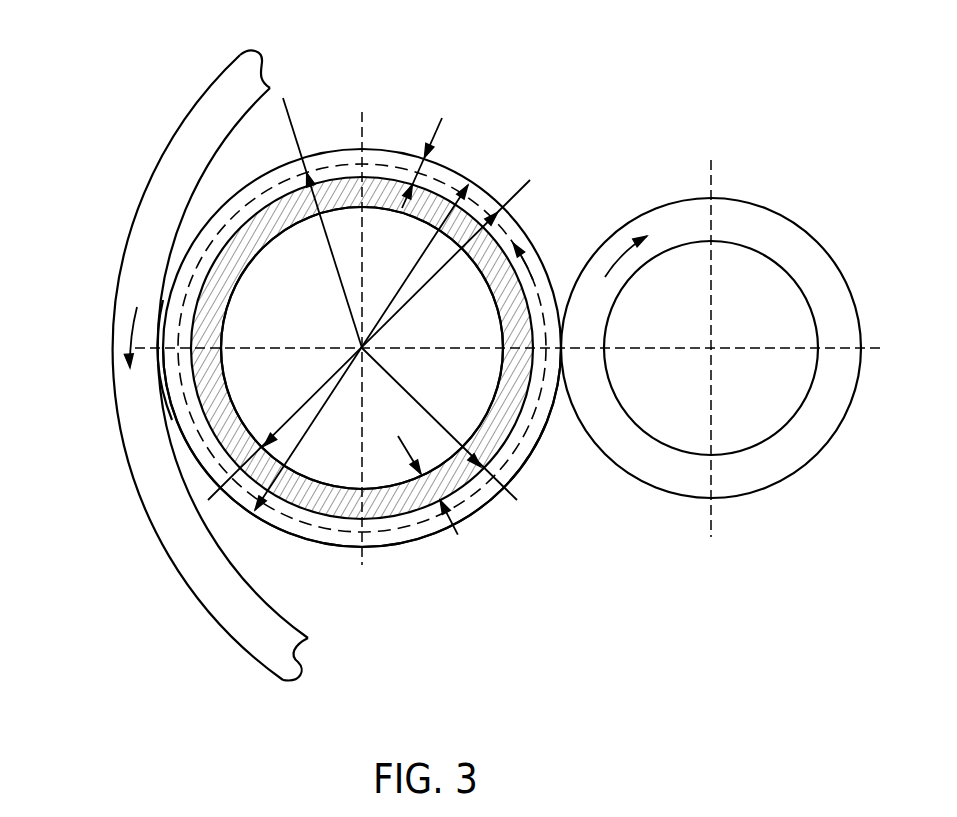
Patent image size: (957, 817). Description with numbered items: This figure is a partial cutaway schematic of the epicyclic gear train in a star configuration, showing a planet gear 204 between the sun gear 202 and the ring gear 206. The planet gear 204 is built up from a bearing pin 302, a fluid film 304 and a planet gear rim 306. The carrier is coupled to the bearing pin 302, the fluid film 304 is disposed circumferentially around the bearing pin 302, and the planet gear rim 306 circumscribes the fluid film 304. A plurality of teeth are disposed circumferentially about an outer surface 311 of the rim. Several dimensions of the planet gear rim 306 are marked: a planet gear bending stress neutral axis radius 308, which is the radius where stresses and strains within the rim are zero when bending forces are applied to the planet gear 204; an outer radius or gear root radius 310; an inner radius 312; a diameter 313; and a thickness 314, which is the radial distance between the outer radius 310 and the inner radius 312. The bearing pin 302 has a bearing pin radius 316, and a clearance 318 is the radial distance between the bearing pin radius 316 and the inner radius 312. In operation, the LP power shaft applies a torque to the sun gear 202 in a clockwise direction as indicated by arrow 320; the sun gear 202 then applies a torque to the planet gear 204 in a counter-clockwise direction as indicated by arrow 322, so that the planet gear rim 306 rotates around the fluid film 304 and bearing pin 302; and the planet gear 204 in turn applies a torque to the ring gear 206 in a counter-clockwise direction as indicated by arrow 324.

The sun gear 202 is at (780, 207).
The planet gear 204 is at (396, 152).
The ring gear 206 is at (220, 66).
The bearing pin 302 is at (378, 443).
The fluid film 304 is at (493, 432).
The planet gear rim 306 is at (358, 143).
The planet gear bending stress neutral axis radius 308 is at (285, 98).
The outer radius 310 is at (530, 180).
The outer surface 311 is at (425, 537).
The inner radius 312 is at (517, 500).
The diameter 313 is at (458, 182).
The thickness 314 is at (443, 120).
The bearing pin radius 316 is at (212, 488).
The clearance 318 is at (460, 530).
The arrow 320 is at (620, 250).
The arrow 322 is at (540, 258).
The arrow 324 is at (128, 330).